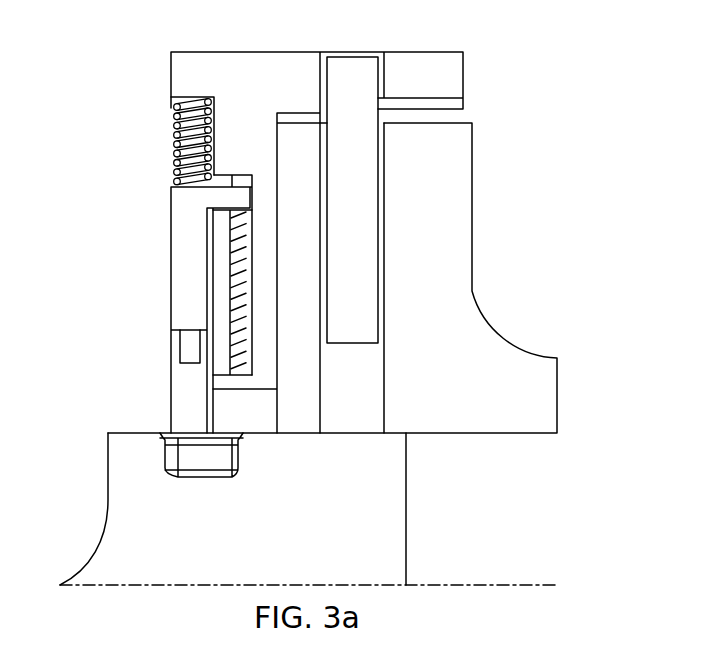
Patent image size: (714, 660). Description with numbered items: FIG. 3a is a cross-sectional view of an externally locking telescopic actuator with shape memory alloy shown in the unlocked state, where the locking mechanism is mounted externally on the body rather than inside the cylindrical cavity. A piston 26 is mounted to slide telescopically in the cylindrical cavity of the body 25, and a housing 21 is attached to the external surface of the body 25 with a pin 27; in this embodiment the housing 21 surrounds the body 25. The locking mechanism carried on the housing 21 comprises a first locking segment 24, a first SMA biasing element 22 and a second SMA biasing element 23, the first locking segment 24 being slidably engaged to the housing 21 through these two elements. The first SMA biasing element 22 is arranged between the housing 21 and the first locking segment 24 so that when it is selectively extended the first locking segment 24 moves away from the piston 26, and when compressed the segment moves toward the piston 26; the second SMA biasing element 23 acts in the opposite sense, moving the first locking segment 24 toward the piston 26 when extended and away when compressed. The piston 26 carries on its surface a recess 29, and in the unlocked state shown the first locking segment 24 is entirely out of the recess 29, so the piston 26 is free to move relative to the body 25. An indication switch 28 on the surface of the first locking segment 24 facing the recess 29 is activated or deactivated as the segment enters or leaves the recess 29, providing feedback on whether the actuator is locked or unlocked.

The housing 21 is at (253, 96).
The first SMA biasing element 22 is at (220, 230).
The second SMA biasing element 23 is at (175, 158).
The first locking segment 24 is at (171, 290).
The body 25 is at (445, 228).
The piston 26 is at (368, 558).
The pin 27 is at (383, 175).
The indication switch 28 is at (200, 347).
The recess 29 is at (163, 477).